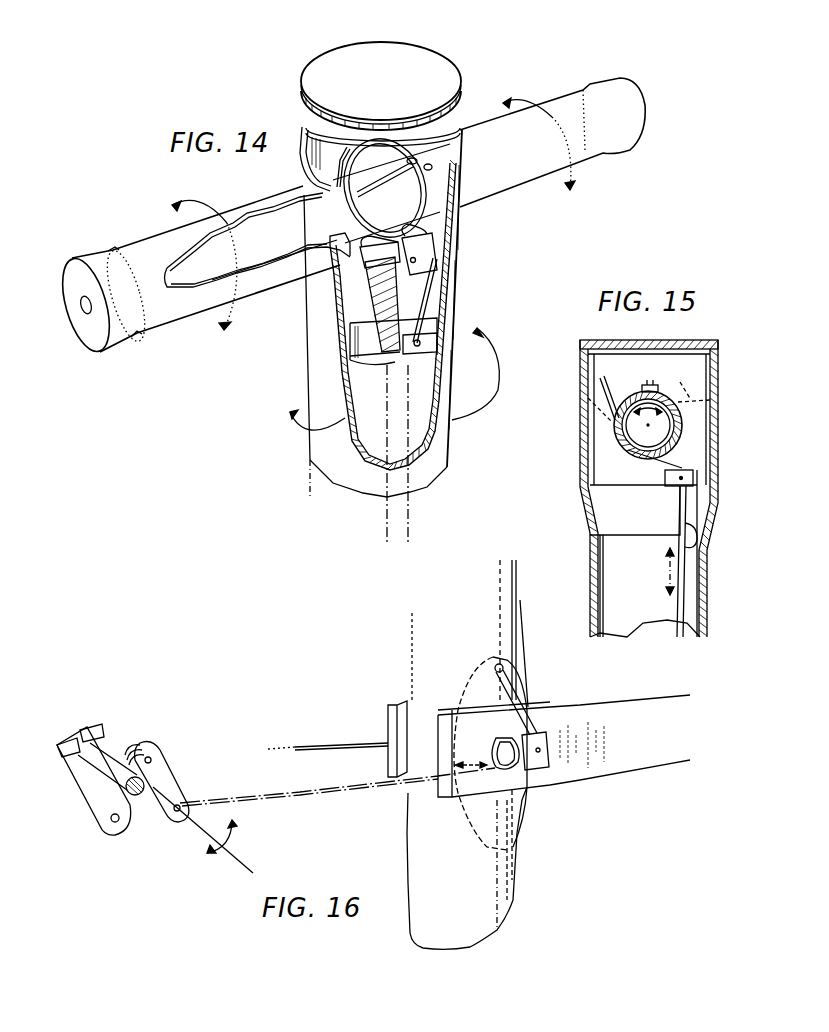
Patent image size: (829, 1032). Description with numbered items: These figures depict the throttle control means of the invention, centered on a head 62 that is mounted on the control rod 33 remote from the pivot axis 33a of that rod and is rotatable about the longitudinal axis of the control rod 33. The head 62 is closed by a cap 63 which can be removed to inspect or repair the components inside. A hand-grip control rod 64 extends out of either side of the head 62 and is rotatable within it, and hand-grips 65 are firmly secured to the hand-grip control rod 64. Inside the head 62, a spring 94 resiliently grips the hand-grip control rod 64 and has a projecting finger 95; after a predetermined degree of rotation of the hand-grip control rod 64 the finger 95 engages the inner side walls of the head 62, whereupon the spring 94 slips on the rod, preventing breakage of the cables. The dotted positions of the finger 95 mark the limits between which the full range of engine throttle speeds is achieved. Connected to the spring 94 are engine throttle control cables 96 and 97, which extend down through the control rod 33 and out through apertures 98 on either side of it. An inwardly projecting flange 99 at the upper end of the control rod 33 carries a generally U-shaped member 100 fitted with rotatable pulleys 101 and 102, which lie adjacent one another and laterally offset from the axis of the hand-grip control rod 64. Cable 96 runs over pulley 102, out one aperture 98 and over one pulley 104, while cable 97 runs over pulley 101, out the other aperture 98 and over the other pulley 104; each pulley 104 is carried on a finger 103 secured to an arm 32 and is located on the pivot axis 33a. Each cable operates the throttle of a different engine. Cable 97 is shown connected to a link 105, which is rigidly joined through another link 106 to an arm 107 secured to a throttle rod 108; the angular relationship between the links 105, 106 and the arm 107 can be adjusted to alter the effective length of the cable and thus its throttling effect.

In FIG. 16, the arm 32 is at (395, 713).
In FIG. 14, the control rod 33 is at (423, 372).
In FIG. 15, the control rod 33 is at (638, 548).
In FIG. 16, the control rod 33 is at (438, 642).
In FIG. 16, the pivot axis 33a is at (493, 768).
In FIG. 14, the head 62 is at (460, 256).
In FIG. 15, the head 62 is at (584, 438).
In FIG. 14, the cap 63 is at (430, 72).
In FIG. 15, the cap 63 is at (700, 340).
In FIG. 14, the hand-grip control rod 64 is at (287, 232).
In FIG. 15, the hand-grip control rod 64 is at (622, 452).
In FIG. 14, the hand-grip 65 is at (240, 215).
In FIG. 14, the spring 94 is at (447, 177).
In FIG. 15, the spring 94 is at (683, 418).
In FIG. 14, the projecting finger 95 is at (347, 145).
In FIG. 15, the projecting finger 95 is at (612, 417).
In FIG. 14, the engine throttle control cable 96 is at (387, 511).
In FIG. 15, the engine throttle control cable 96 is at (613, 427).
In FIG. 16, the engine throttle control cable 96 is at (358, 742).
In FIG. 14, the engine throttle control cable 97 is at (430, 302).
In FIG. 16, the engine throttle control cable 97 is at (207, 795).
In FIG. 16, the aperture 98 is at (495, 668).
In FIG. 14, the inwardly projecting flange 99 is at (393, 357).
In FIG. 15, the inwardly projecting flange 99 is at (697, 540).
In FIG. 14, the U-shaped member 100 is at (369, 305).
In FIG. 15, the U-shaped member 100 is at (692, 505).
In FIG. 14, the rotatable pulley 101 is at (430, 242).
In FIG. 14, the rotatable pulley 102 is at (363, 278).
In FIG. 15, the rotatable pulley 102 is at (683, 466).
In FIG. 16, the finger 103 is at (517, 722).
In FIG. 16, the rotatable pulley 104 is at (510, 768).
In FIG. 16, the link 105 is at (162, 770).
In FIG. 16, the link 106 is at (131, 752).
In FIG. 16, the arm 107 is at (102, 797).
In FIG. 16, the throttle rod 108 is at (107, 765).